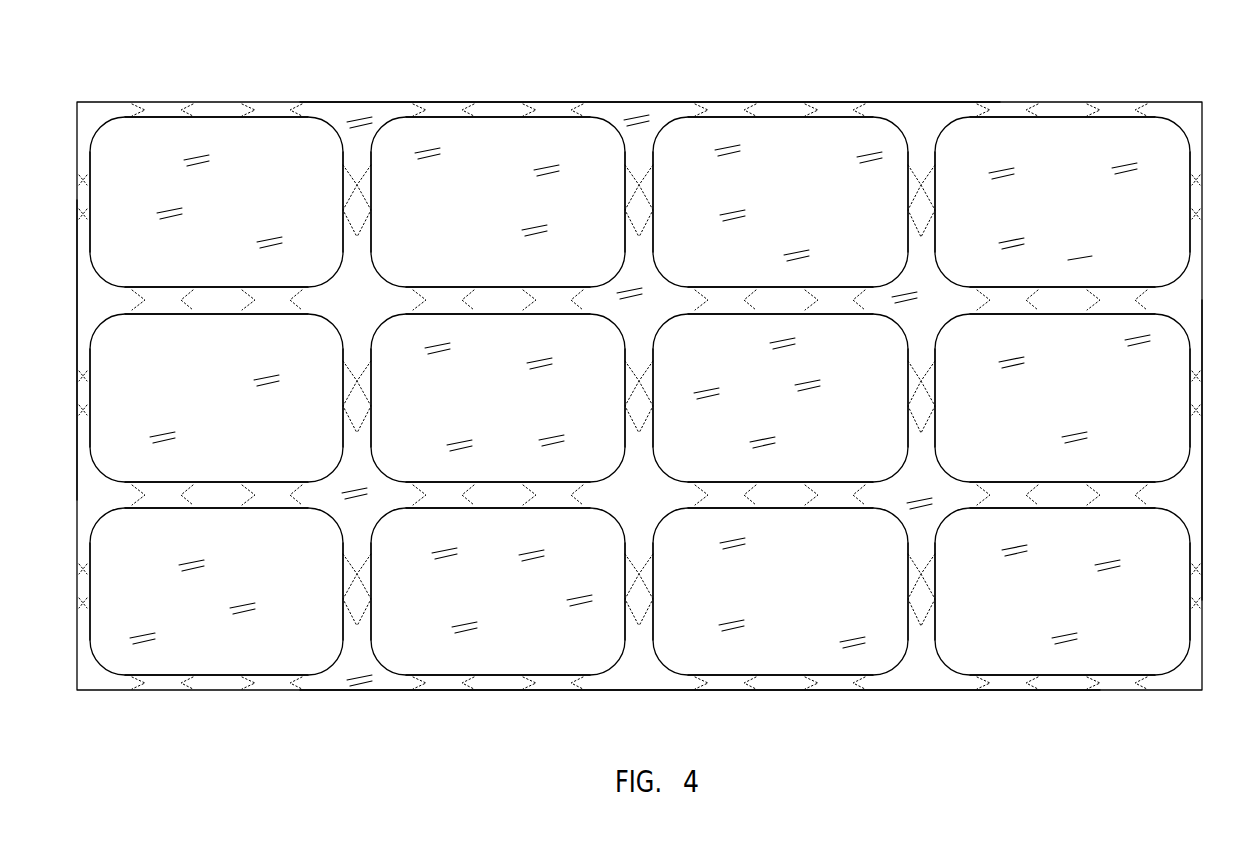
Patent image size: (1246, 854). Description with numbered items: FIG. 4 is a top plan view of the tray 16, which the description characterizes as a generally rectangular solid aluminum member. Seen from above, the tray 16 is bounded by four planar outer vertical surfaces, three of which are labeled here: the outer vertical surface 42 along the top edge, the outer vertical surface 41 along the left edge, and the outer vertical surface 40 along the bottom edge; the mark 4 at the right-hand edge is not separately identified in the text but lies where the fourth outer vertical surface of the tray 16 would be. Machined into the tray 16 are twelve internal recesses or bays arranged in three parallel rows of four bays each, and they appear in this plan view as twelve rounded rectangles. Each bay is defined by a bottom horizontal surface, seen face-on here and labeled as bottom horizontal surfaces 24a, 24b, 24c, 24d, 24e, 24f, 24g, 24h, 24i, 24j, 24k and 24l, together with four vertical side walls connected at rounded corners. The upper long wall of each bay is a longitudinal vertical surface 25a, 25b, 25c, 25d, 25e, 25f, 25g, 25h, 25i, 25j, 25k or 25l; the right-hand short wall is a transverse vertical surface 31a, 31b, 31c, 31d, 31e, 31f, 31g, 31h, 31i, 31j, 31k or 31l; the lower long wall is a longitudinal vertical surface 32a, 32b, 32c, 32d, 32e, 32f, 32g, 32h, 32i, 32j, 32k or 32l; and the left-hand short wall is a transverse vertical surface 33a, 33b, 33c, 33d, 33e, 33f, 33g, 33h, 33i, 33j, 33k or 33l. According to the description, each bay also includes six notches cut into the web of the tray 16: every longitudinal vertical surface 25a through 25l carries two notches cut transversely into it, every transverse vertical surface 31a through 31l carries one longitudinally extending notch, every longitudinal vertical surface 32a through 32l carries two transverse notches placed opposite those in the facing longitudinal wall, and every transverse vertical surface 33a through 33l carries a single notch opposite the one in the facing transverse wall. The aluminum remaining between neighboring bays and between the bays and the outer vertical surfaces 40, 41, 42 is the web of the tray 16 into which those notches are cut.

The tray 16 is at (1153, 85).
The right edge of sheet 4 is at (1202, 485).
The outer vertical surface 40 is at (900, 690).
The outer vertical surface 41 is at (77, 295).
The outer vertical surface 42 is at (627, 102).
The bottom horizontal surface 24a is at (197, 213).
The bottom horizontal surface 24b is at (429, 210).
The bottom horizontal surface 24c is at (772, 216).
The bottom horizontal surface 24d is at (1009, 211).
The bottom horizontal surface 24e is at (177, 401).
The bottom horizontal surface 24f is at (497, 411).
The bottom horizontal surface 24g is at (732, 410).
The bottom horizontal surface 24h is at (1061, 410).
The bottom horizontal surface 24i is at (226, 573).
The bottom horizontal surface 24j is at (481, 596).
The bottom horizontal surface 24k is at (707, 593).
The bottom horizontal surface 24l is at (1092, 613).
The longitudinal vertical surface 25a is at (233, 119).
The longitudinal vertical surface 25b is at (488, 118).
The longitudinal vertical surface 25c is at (772, 118).
The longitudinal vertical surface 25d is at (1062, 118).
The longitudinal vertical surface 25e is at (255, 316).
The longitudinal vertical surface 25f is at (535, 315).
The longitudinal vertical surface 25g is at (823, 315).
The longitudinal vertical surface 25h is at (1048, 312).
The longitudinal vertical surface 25i is at (188, 512).
The longitudinal vertical surface 25j is at (465, 508).
The longitudinal vertical surface 25k is at (768, 508).
The longitudinal vertical surface 25l is at (1072, 508).
The transverse vertical surface 31a is at (343, 187).
The transverse vertical surface 31b is at (625, 183).
The transverse vertical surface 31c is at (907, 185).
The transverse vertical surface 31d is at (1190, 187).
The transverse vertical surface 31e is at (343, 405).
The transverse vertical surface 31f is at (625, 375).
The transverse vertical surface 31g is at (907, 398).
The transverse vertical surface 31h is at (1190, 400).
The transverse vertical surface 31i is at (343, 595).
The transverse vertical surface 31j is at (625, 607).
The transverse vertical surface 31k is at (907, 567).
The transverse vertical surface 31l is at (1190, 597).
The longitudinal vertical surface 32a is at (187, 287).
The longitudinal vertical surface 32b is at (463, 287).
The longitudinal vertical surface 32c is at (825, 285).
The longitudinal vertical surface 32d is at (1115, 283).
The longitudinal vertical surface 32e is at (205, 482).
The longitudinal vertical surface 32f is at (430, 482).
The longitudinal vertical surface 32g is at (842, 480).
The longitudinal vertical surface 32h is at (1000, 478).
The longitudinal vertical surface 32i is at (230, 675).
The longitudinal vertical surface 32j is at (517, 675).
The longitudinal vertical surface 32k is at (795, 673).
The longitudinal vertical surface 32l is at (998, 673).
The transverse vertical surface 33a is at (92, 162).
The transverse vertical surface 33b is at (372, 160).
The transverse vertical surface 33c is at (653, 158).
The transverse vertical surface 33d is at (938, 153).
The transverse vertical surface 33e is at (90, 387).
The transverse vertical surface 33f is at (372, 387).
The transverse vertical surface 33g is at (653, 380).
The transverse vertical surface 33h is at (937, 383).
The transverse vertical surface 33i is at (92, 632).
The transverse vertical surface 33j is at (372, 618).
The transverse vertical surface 33k is at (653, 612).
The transverse vertical surface 33l is at (938, 610).